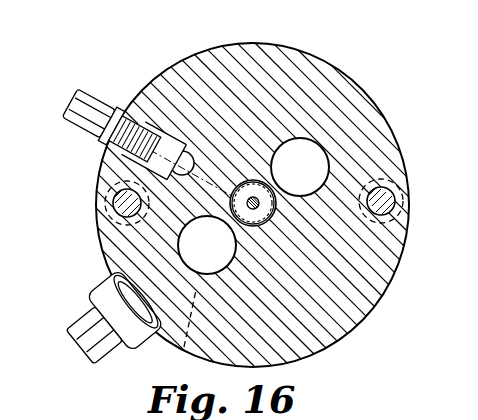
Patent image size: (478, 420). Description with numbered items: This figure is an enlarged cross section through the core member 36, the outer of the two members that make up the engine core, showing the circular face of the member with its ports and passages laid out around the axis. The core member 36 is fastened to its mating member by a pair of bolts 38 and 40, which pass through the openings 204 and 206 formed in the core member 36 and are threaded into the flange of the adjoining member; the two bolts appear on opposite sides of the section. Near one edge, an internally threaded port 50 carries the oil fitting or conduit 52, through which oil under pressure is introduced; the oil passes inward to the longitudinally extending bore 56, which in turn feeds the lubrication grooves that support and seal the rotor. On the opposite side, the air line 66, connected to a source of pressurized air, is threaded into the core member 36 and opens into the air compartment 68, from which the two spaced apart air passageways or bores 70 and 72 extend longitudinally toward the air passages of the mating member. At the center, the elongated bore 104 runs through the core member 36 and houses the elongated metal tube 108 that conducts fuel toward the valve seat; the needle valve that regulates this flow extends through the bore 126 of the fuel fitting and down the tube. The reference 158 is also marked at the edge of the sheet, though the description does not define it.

The core member 36 is at (298, 52).
The bolt 38 is at (112, 196).
The bolt 40 is at (405, 198).
The internally threaded port 50 is at (104, 156).
The oil fitting or conduit 52 is at (80, 86).
The longitudinally extending bore 56 is at (183, 151).
The air line 66 is at (68, 330).
The air compartment 68 is at (184, 347).
The air passageway or bore 70 is at (306, 186).
The air passageway or bore 72 is at (213, 264).
The elongated bore 104 is at (233, 183).
The elongated metal tube 108 is at (241, 181).
The bore 126 is at (257, 197).
The line 158 is at (15, 43).
The opening 204 is at (104, 235).
The opening 206 is at (398, 222).